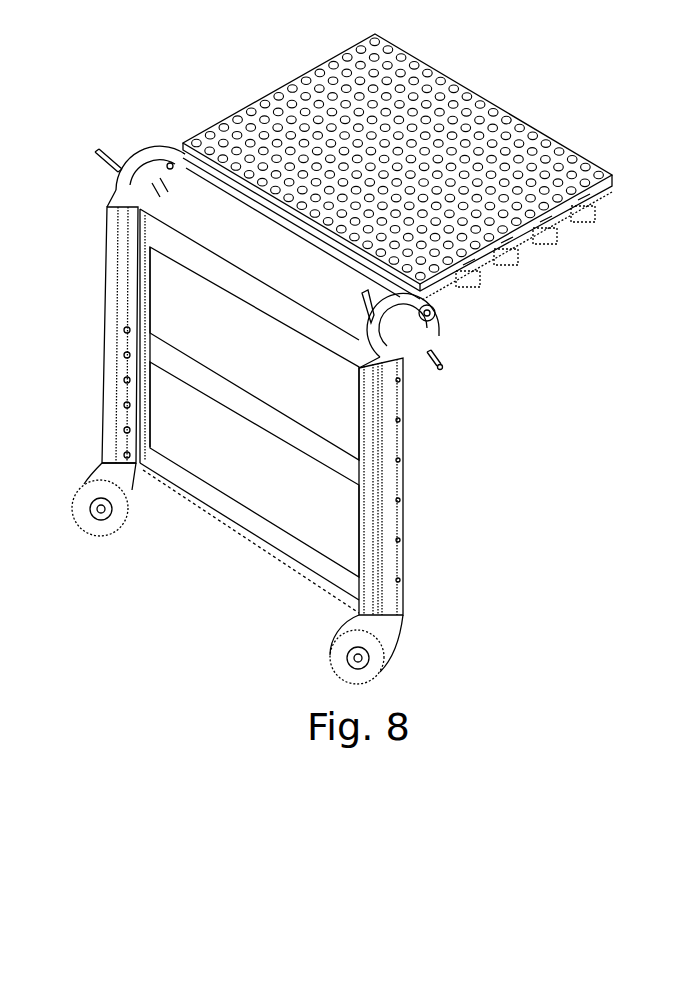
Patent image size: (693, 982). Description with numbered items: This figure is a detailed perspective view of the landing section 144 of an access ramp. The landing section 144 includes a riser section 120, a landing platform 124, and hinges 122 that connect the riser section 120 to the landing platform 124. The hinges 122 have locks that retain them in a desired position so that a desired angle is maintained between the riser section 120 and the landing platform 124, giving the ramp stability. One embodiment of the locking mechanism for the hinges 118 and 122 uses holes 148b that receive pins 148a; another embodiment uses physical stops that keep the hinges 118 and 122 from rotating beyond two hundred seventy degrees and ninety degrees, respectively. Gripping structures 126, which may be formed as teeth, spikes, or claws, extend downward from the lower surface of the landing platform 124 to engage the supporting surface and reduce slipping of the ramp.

The hinge 118 is at (368, 647).
The riser section 120 is at (403, 500).
The hinge 122 is at (428, 322).
The landing platform 124 is at (457, 112).
The gripping structures 126 is at (511, 256).
The landing section 144 is at (376, 359).
The pins 148a is at (437, 370).
The holes 148b is at (118, 485).